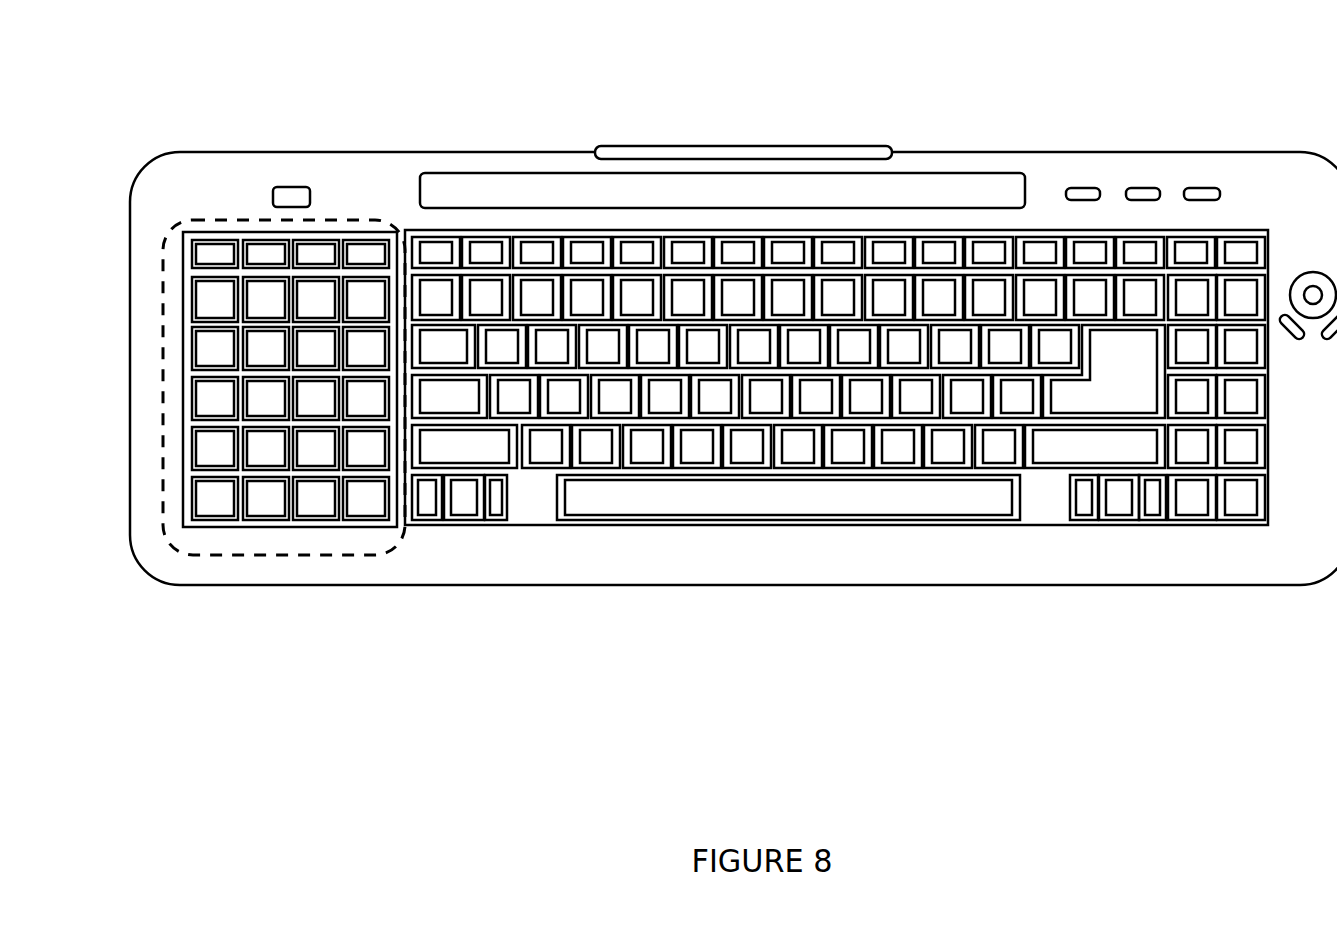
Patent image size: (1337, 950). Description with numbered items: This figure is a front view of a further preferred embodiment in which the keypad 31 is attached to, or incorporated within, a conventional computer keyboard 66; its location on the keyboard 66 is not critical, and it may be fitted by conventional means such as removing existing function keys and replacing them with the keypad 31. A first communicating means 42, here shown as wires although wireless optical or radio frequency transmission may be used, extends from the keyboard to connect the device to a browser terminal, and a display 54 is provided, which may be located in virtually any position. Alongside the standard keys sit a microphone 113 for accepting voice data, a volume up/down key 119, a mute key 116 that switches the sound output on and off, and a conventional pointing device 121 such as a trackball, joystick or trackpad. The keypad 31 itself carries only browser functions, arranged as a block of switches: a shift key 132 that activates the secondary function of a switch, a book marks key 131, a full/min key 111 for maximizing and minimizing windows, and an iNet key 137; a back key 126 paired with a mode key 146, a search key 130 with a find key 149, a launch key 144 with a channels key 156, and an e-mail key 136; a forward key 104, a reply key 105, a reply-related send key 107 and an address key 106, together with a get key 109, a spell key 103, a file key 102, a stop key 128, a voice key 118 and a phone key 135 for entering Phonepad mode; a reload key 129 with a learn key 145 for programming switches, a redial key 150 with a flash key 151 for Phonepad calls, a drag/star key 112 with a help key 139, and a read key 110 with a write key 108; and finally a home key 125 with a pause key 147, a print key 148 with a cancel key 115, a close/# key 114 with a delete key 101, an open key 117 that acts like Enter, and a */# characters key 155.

The keypad 31 is at (157, 238).
The first communicating means 42 is at (772, 145).
The display 54 is at (722, 190).
The computer keyboard 66 is at (1068, 162).
The microphone 113 is at (273, 186).
The mute key 116 is at (1184, 186).
The volume up/down key 119 is at (1094, 186).
The pointing device 121 is at (1307, 296).
The delete key 101 is at (316, 500).
The file key 102 is at (316, 400).
The spell key 103 is at (366, 350).
The forward key 104 is at (215, 348).
The reply key 105 is at (316, 348).
The address key 106 is at (316, 398).
The send key 107 is at (366, 398).
The write key 108 is at (366, 450).
The get key 109 is at (366, 348).
The read key 110 is at (366, 448).
The full/min key 111 is at (316, 255).
The drag/star key 112 is at (316, 448).
The close/# key 114 is at (316, 498).
The cancel key 115 is at (266, 500).
The open key 117 is at (366, 498).
The voice key 118 is at (266, 398).
The home key 125 is at (215, 498).
The back key 126 is at (215, 298).
The stop key 128 is at (215, 398).
The reload key 129 is at (215, 448).
The search key 130 is at (266, 298).
The book marks key 131 is at (266, 255).
The shift key 132 is at (215, 255).
The phone key 135 is at (266, 400).
The e-mail key 136 is at (366, 299).
The iNet key 137 is at (366, 255).
The help key 139 is at (316, 450).
The launch key 144 is at (316, 298).
The learn key 145 is at (215, 450).
The mode key 146 is at (215, 300).
The pause key 147 is at (215, 500).
The print key 148 is at (266, 498).
The find key 149 is at (266, 300).
The redial key 150 is at (266, 448).
The flash key 151 is at (266, 450).
The */# characters key 155 is at (266, 348).
The channels key 156 is at (316, 300).